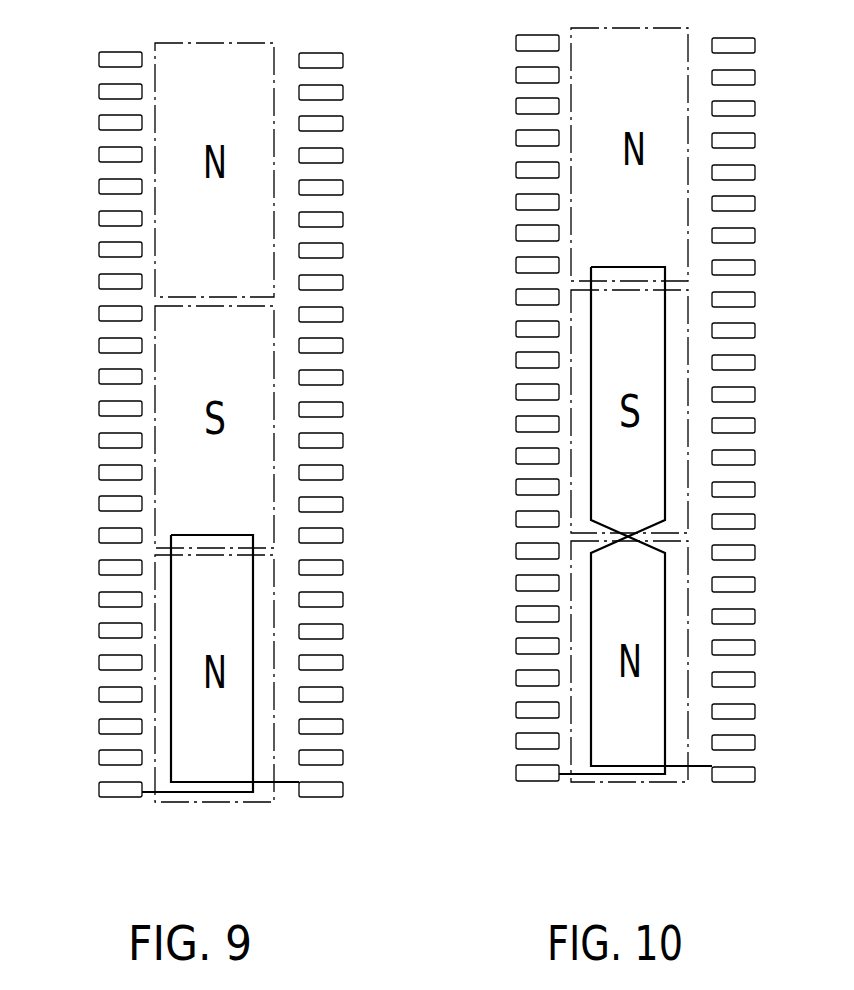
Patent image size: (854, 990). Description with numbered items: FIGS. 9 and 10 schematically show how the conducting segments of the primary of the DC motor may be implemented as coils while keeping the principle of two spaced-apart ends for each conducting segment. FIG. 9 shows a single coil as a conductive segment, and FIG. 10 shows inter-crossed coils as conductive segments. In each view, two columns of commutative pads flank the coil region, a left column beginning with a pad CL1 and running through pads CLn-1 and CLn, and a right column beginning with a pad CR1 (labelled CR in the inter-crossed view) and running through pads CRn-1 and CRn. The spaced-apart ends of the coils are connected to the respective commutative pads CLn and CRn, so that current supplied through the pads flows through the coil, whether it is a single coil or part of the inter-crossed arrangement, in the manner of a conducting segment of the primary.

In FIG. 9, the first left coil CL1 is at (90, 53).
In FIG. 10, the first left coil CL1 is at (510, 35).
In FIG. 9, the second-to-last left coil CLn-1 is at (82, 759).
In FIG. 10, the second-to-last left coil CLn-1 is at (502, 745).
In FIG. 9, the commutative pad CLn is at (82, 793).
In FIG. 10, the commutative pad CLn is at (504, 778).
In FIG. 9, the first right coil CR1 is at (347, 53).
In FIG. 10, the first right coil CR is at (754, 36).
In FIG. 9, the second-to-last right coil CRn-1 is at (357, 763).
In FIG. 10, the second-to-last right coil CRn-1 is at (766, 747).
In FIG. 9, the commutative pad CRn is at (349, 797).
In FIG. 10, the commutative pad CRn is at (758, 784).